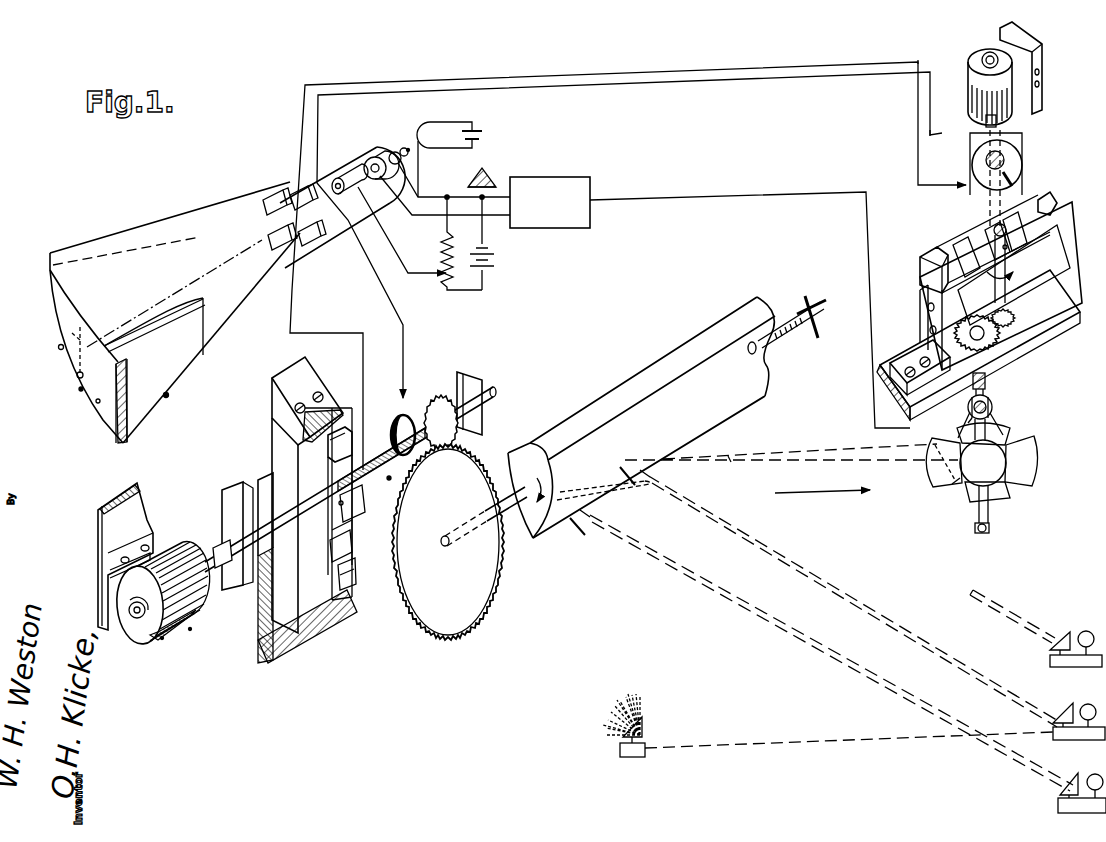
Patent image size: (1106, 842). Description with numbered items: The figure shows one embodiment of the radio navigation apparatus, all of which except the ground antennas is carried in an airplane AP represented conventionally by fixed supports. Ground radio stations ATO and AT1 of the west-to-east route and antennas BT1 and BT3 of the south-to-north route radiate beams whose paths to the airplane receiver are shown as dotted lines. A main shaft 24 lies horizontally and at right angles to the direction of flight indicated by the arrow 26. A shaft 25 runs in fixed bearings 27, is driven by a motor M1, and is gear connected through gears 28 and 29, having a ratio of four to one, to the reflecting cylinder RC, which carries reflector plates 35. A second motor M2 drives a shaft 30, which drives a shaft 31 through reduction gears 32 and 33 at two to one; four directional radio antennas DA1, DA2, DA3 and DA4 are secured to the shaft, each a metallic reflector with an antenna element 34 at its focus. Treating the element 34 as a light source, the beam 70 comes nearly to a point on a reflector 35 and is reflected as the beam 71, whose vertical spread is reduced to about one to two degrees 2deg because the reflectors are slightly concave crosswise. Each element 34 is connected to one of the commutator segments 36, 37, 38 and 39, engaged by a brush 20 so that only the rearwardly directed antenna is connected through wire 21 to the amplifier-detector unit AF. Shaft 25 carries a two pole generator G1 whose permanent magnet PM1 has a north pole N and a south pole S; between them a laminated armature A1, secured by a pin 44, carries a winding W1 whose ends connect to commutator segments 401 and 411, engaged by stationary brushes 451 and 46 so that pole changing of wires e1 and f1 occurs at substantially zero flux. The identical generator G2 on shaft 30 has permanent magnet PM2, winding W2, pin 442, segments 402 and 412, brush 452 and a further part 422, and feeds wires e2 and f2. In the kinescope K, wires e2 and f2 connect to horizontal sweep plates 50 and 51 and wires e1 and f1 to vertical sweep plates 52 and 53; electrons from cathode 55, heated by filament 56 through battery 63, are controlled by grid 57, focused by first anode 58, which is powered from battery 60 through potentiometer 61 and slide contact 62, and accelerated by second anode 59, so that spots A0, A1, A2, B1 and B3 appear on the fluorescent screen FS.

The cathode-ray tube K is at (72, 250).
The horizontal sweep plate 50 is at (268, 198).
The horizontal sweep plate 51 is at (305, 245).
The vertical sweep plate 52 is at (293, 193).
The vertical sweep plate 53 is at (278, 248).
The cathode 55 is at (393, 153).
The filament 56 is at (403, 147).
The grid 57 is at (372, 160).
The first anode 58 is at (345, 178).
The second anode 59 is at (204, 322).
The battery 60 is at (486, 262).
The potentiometer 61 is at (445, 247).
The slide contact 62 is at (440, 276).
The battery 63 is at (468, 134).
The amplifier-detector unit AF is at (553, 177).
The wire 21 is at (636, 199).
The wire e1 is at (374, 260).
The wire f1 is at (292, 290).
The wire e2 is at (918, 176).
The wire f2 is at (930, 133).
The airplane AP is at (290, 368).
The two pole generator G1 is at (272, 450).
The permanent magnet field magnet PM1 is at (350, 590).
The north pole N is at (634, 361).
The south pole S is at (696, 393).
The motor M1 is at (142, 642).
The fixed bearings 27 is at (228, 543).
The shaft 25 is at (492, 388).
The gear 28 is at (441, 396).
The gear 29 is at (492, 592).
The main shaft 24 is at (522, 533).
The commutator segment 401 is at (396, 418).
The stationary brush 451 is at (405, 420).
The stationary brush 46 is at (386, 480).
The pin 44 is at (342, 504).
The commutator segment 411 is at (358, 516).
The winding W1 is at (350, 540).
The armature A1 is at (77, 376).
The spot A2 is at (972, 238).
The spot A0 is at (80, 389).
The spot B1 is at (99, 398).
The spot B3 is at (58, 346).
The fluorescent screen FS is at (107, 400).
The reflecting cylinder RC is at (574, 413).
The reflector plate 35 is at (740, 401).
The beam 70 is at (826, 458).
The reflected beam 71 is at (907, 628).
The arrow 26 is at (822, 485).
The beam spread 2deg is at (734, 452).
The radio ray station ATO is at (630, 757).
The radio transmitting antenna AT1 is at (1082, 740).
The directional antenna BT1 is at (1058, 806).
The directional antenna BT3 is at (1076, 667).
The motor M2 is at (980, 62).
The shaft 30 is at (998, 121).
The commutator segment 402 is at (985, 160).
The commutator segment 412 is at (1008, 165).
The stationary brush 452 is at (974, 182).
The winding W2 is at (1017, 212).
The two pole generator G2 is at (1060, 210).
The permanent magnet field magnet PM2 is at (926, 262).
The pin 442 is at (1005, 245).
The bracket 422 is at (922, 325).
The reduction gear 32 is at (1014, 320).
The reduction gear 33 is at (968, 352).
The shaft 31 is at (988, 382).
The commutator segment 36 is at (993, 407).
The commutator segment 37 is at (992, 415).
The commutator segment 38 is at (969, 410).
The commutator segment 39 is at (985, 400).
The contact brush 20 is at (969, 416).
The antenna element 34 is at (952, 484).
The directional radio antenna DA1 is at (930, 468).
The directional radio antenna DA2 is at (1003, 432).
The directional radio antenna DA3 is at (1028, 468).
The directional radio antenna DA4 is at (998, 486).